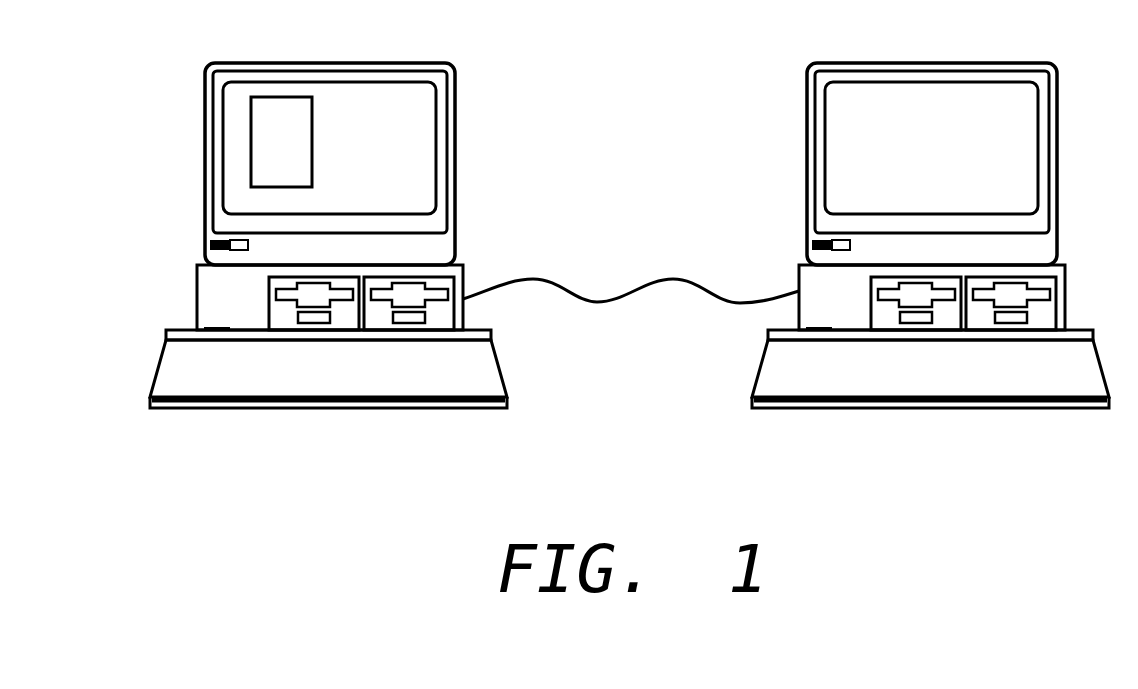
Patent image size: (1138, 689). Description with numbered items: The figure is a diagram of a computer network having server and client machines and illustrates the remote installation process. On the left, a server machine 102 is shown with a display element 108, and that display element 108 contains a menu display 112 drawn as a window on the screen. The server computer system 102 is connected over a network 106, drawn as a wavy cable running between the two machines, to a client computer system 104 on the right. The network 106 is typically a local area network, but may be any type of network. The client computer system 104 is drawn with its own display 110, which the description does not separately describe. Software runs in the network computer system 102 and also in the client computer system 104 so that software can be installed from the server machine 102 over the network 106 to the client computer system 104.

The server machine 102 is at (322, 233).
The client computer system 104 is at (940, 229).
The network 106 is at (550, 286).
The display element 108 is at (359, 161).
The display of second computer 110 is at (1057, 102).
The menu display 112 is at (312, 131).